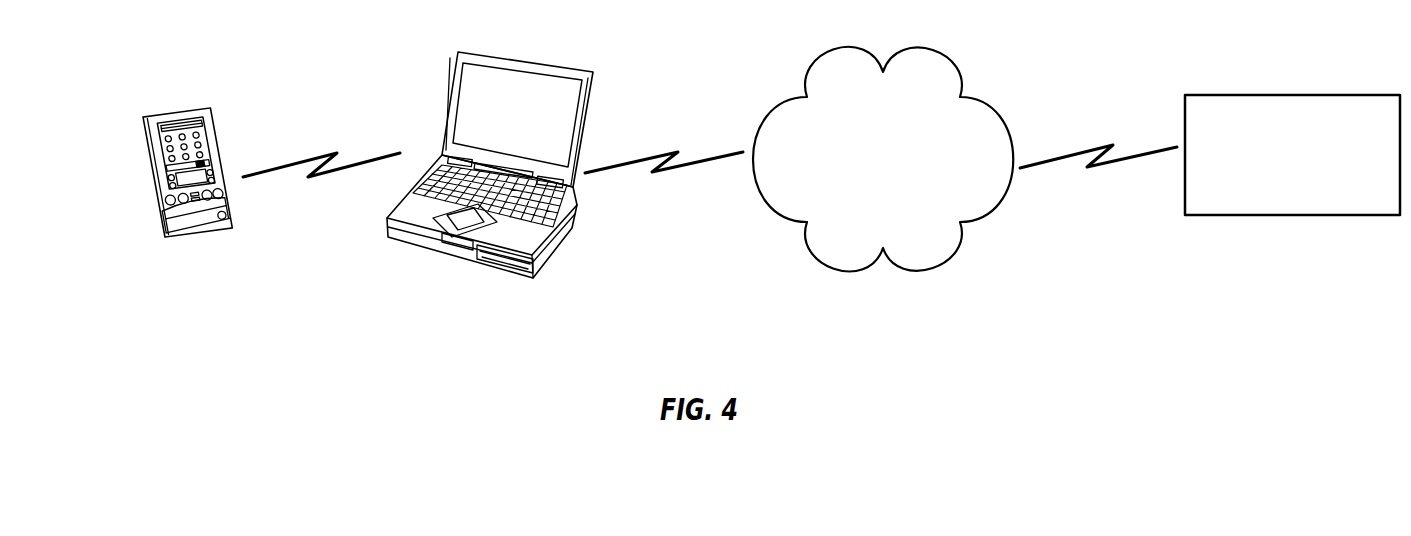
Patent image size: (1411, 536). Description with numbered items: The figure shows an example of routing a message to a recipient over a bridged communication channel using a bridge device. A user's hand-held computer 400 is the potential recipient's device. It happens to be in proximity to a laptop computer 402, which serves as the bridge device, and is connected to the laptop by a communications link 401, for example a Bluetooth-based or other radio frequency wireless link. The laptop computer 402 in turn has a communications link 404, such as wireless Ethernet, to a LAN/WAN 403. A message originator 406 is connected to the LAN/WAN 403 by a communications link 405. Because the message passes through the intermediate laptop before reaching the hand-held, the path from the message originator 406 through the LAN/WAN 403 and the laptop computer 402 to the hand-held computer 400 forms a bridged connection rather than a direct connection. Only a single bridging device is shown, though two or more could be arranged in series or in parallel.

The hand-held computer 400 is at (177, 115).
The communications link 401 is at (360, 163).
The laptop computer 402 is at (450, 92).
The LAN/WAN 403 is at (905, 226).
The communications link 404 is at (698, 163).
The communications link 405 is at (1140, 157).
The message originator 406 is at (1312, 201).